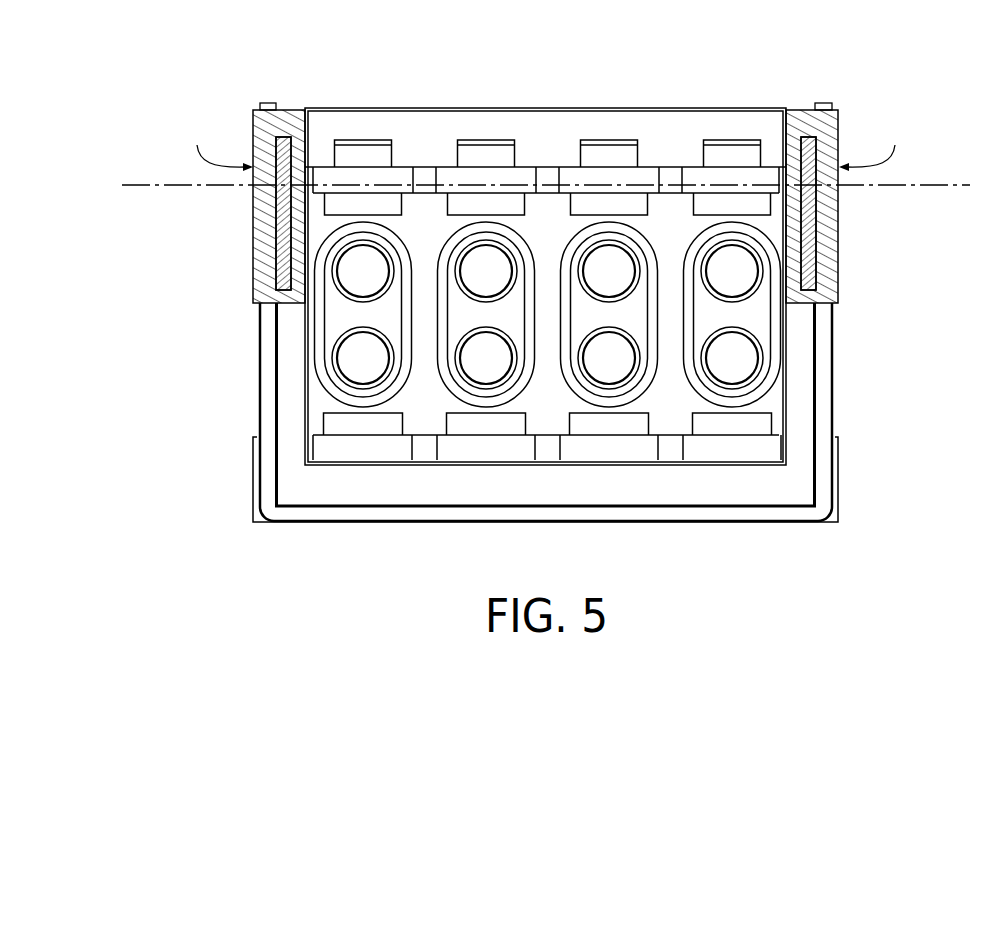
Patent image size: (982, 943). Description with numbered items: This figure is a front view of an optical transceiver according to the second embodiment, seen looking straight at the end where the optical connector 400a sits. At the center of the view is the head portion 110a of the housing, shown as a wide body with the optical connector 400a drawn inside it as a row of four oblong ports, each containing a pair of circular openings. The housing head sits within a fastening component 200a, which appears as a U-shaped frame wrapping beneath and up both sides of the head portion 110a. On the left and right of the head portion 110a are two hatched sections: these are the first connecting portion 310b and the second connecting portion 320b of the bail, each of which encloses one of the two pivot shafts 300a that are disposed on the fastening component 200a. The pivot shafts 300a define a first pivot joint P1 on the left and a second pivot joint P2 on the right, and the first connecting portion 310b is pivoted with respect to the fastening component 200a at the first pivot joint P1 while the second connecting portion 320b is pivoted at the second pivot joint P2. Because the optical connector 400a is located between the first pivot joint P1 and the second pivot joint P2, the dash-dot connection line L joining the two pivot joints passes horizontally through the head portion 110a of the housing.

The head portion 110a is at (692, 122).
The fastening component 200a is at (823, 371).
The pivot shaft 300a is at (263, 205).
The first connecting portion 310b is at (281, 122).
The second connecting portion 320b is at (810, 122).
The optical connector 400a is at (546, 213).
The first pivot joint P1 is at (217, 145).
The second pivot joint P2 is at (873, 145).
The connection line L is at (534, 184).